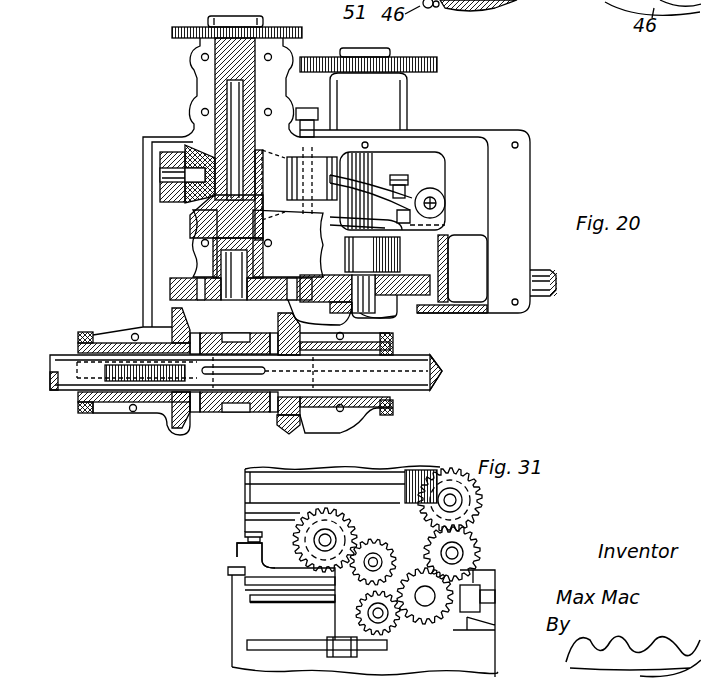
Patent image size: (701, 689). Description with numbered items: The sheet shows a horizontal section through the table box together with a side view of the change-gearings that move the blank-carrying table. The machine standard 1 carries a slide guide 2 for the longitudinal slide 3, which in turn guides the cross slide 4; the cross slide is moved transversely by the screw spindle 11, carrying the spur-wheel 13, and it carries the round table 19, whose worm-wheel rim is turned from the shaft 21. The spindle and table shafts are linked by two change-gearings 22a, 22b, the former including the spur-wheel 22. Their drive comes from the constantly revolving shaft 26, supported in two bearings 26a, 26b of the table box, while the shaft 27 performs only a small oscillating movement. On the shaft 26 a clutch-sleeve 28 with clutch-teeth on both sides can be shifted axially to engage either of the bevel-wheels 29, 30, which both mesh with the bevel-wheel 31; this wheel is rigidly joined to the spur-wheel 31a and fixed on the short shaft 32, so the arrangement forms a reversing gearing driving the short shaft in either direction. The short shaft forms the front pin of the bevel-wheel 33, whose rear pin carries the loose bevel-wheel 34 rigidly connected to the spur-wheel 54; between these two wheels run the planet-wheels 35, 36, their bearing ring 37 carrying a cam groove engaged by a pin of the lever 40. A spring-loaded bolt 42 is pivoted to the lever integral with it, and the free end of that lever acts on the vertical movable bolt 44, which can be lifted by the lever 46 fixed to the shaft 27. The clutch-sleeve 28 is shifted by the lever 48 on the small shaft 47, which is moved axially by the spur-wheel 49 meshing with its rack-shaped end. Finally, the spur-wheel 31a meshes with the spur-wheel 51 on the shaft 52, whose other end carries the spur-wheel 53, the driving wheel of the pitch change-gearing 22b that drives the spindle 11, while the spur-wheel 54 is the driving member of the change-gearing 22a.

In FIG. 31, the standard 1 is at (483, 660).
In FIG. 31, the slide guide 2 is at (233, 573).
In FIG. 31, the longitudinal slide 3 is at (245, 554).
In FIG. 31, the cross slide 4 is at (255, 523).
In FIG. 31, the screw spindle 11 is at (329, 536).
In FIG. 31, the spur-wheel 13 is at (321, 516).
In FIG. 31, the round table 19 is at (418, 470).
In FIG. 31, the shaft 21 is at (452, 497).
In FIG. 31, the spur-wheel 22 is at (481, 498).
In FIG. 31, the change-gearing 22a is at (471, 540).
In FIG. 31, the pitch change-gearing 22b is at (352, 580).
In FIG. 20, the shaft 26 is at (50, 366).
In FIG. 31, the shaft 26 is at (250, 600).
In FIG. 20, the bearing 26a is at (117, 412).
In FIG. 20, the bearing 26b is at (387, 420).
In FIG. 20, the shaft 27 is at (557, 283).
In FIG. 31, the shaft 27 is at (248, 645).
In FIG. 20, the clutch-sleeve 28 is at (238, 406).
In FIG. 20, the bevel-wheel 29 is at (183, 420).
In FIG. 20, the bevel-wheel 30 is at (300, 428).
In FIG. 20, the bevel-wheel 31 is at (174, 309).
In FIG. 20, the spur-wheel 31a is at (177, 291).
In FIG. 20, the short shaft 32 is at (230, 263).
In FIG. 20, the bevel-wheel 33 is at (186, 205).
In FIG. 20, the bevel-wheel 34 is at (197, 138).
In FIG. 20, the planet-wheel 35 is at (177, 208).
In FIG. 20, the planet-wheel 36 is at (273, 226).
In FIG. 20, the ring 37 is at (160, 157).
In FIG. 20, the lever 40 is at (422, 164).
In FIG. 20, the bolt 42 is at (404, 172).
In FIG. 20, the vertical movable bolt 44 is at (442, 200).
In FIG. 31, the lever 46 is at (354, 652).
In FIG. 20, the small shaft 47 is at (74, 381).
In FIG. 20, the lever 48 is at (220, 381).
In FIG. 20, the spur-wheel 49 is at (90, 413).
In FIG. 20, the spur-wheel 51 is at (411, 297).
In FIG. 20, the shaft 52 is at (367, 311).
In FIG. 31, the shaft 52 is at (370, 618).
In FIG. 20, the spur-wheel 53 is at (437, 66).
In FIG. 31, the spur-wheel 53 is at (392, 630).
In FIG. 20, the spur-wheel 54 is at (186, 27).
In FIG. 31, the spur-wheel 54 is at (440, 612).